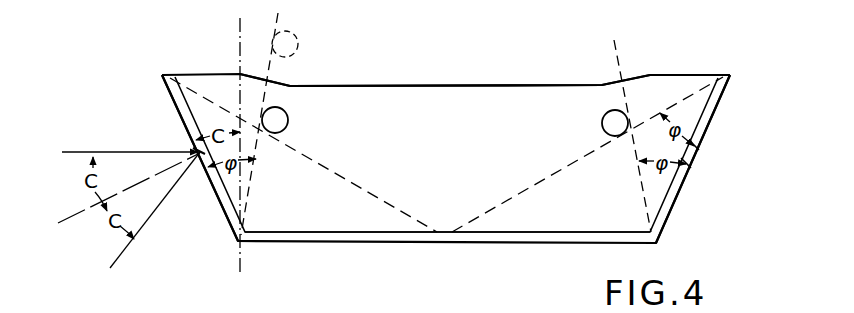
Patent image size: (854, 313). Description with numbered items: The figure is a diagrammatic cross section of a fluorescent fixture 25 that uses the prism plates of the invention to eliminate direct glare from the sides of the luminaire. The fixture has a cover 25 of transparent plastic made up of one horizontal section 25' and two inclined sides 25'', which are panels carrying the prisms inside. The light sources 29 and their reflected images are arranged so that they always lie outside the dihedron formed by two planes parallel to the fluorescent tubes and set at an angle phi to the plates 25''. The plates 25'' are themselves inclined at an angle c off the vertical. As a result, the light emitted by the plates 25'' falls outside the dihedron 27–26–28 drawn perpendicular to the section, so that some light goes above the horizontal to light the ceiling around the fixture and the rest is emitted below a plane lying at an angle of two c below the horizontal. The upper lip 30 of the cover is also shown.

The fluorescent fixture 25 is at (446, 158).
The horizontal section 25' is at (447, 254).
The inclined sides 25'' is at (425, 159).
The dihedron vertex 26 is at (197, 152).
The dihedron plane 27 is at (130, 140).
The dihedron plane 28 is at (129, 210).
The light sources 29 is at (332, 22).
The upper lip 30 is at (371, 83).